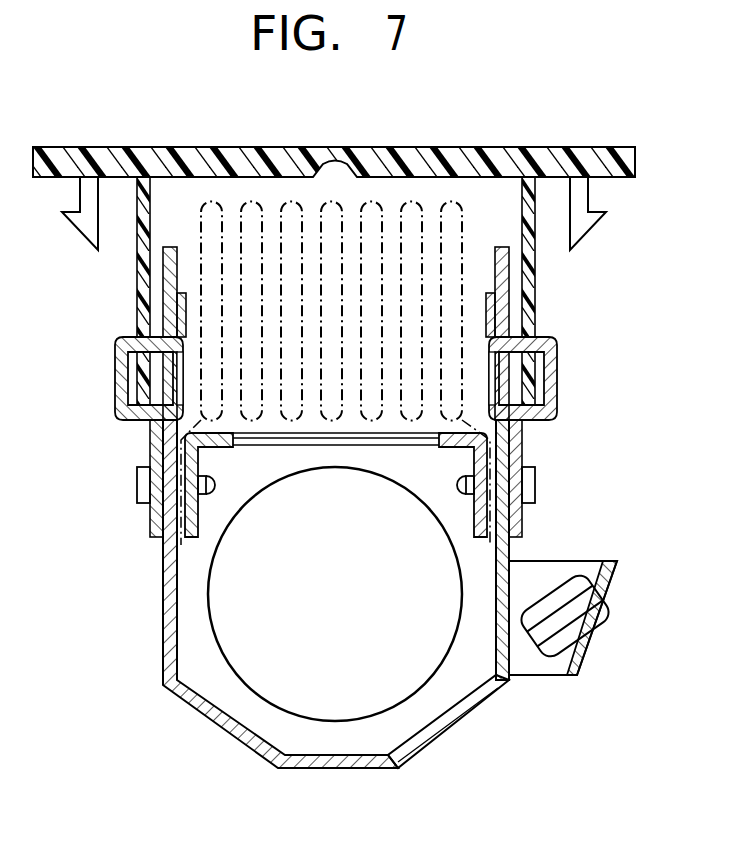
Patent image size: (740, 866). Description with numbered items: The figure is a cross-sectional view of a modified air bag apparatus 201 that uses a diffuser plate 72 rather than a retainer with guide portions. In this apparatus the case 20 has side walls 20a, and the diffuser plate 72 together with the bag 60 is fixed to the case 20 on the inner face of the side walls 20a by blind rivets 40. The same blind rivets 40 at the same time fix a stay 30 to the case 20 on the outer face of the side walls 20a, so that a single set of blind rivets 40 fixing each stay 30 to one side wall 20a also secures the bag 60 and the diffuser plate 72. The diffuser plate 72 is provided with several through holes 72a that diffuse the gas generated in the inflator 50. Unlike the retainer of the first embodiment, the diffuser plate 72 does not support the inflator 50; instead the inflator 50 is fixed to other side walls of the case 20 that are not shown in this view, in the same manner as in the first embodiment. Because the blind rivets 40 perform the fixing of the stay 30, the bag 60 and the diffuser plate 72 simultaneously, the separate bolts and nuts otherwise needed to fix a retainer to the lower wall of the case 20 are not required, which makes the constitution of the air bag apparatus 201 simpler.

The air bag apparatus 201 is at (175, 781).
The case 20 is at (167, 690).
The side walls 20a is at (163, 608).
The stay 30 is at (557, 381).
The blind rivets 40 is at (535, 488).
The inflator 50 is at (210, 630).
The bag 60 is at (416, 204).
The diffuser plate 72 is at (230, 447).
The through holes 72a is at (397, 450).